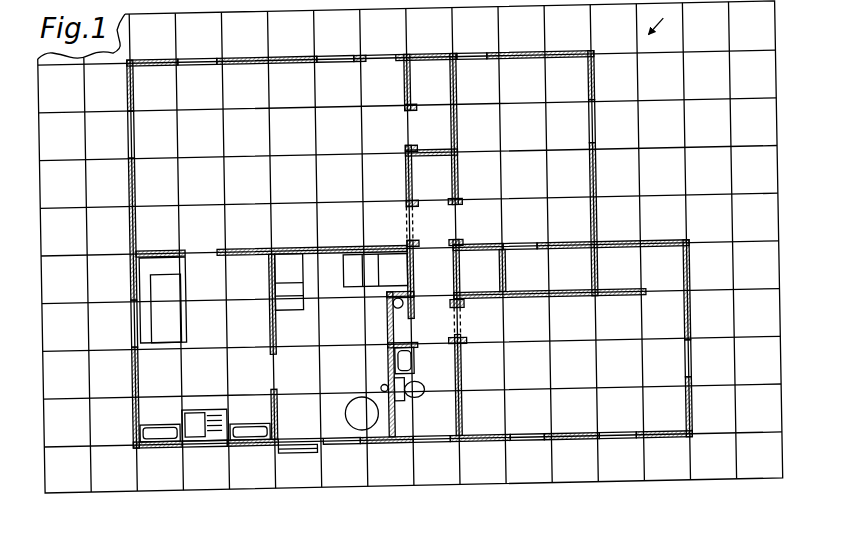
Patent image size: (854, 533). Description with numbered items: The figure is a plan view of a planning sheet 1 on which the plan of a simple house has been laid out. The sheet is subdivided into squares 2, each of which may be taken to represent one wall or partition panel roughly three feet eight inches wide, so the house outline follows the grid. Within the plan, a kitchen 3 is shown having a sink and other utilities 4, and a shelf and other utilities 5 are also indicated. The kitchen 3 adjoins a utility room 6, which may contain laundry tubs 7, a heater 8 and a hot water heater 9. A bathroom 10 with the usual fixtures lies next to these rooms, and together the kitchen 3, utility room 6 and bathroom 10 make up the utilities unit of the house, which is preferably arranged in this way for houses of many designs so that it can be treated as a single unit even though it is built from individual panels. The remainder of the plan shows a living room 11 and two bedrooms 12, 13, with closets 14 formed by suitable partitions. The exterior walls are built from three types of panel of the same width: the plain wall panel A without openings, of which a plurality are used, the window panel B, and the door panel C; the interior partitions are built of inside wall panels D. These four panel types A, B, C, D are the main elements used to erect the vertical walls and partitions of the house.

The planning sheet 1 is at (672, 476).
The squares 2 is at (719, 77).
The kitchen 3 is at (117, 355).
The sink and other utilities 4 is at (204, 408).
The shelf and other utilities 5 is at (99, 299).
The utility room 6 is at (287, 453).
The laundry tubs 7 is at (257, 257).
The heater 8 is at (370, 287).
The hot water heater 9 is at (361, 397).
The bathroom 10 is at (388, 412).
The living room 11 is at (198, 73).
The bedroom 12 is at (472, 64).
The bedroom 13 is at (536, 405).
The closets 14 is at (386, 70).
The plain wall panel A is at (109, 46).
The window panel B is at (143, 47).
The door panel C is at (325, 47).
The inside wall panel D is at (124, 224).